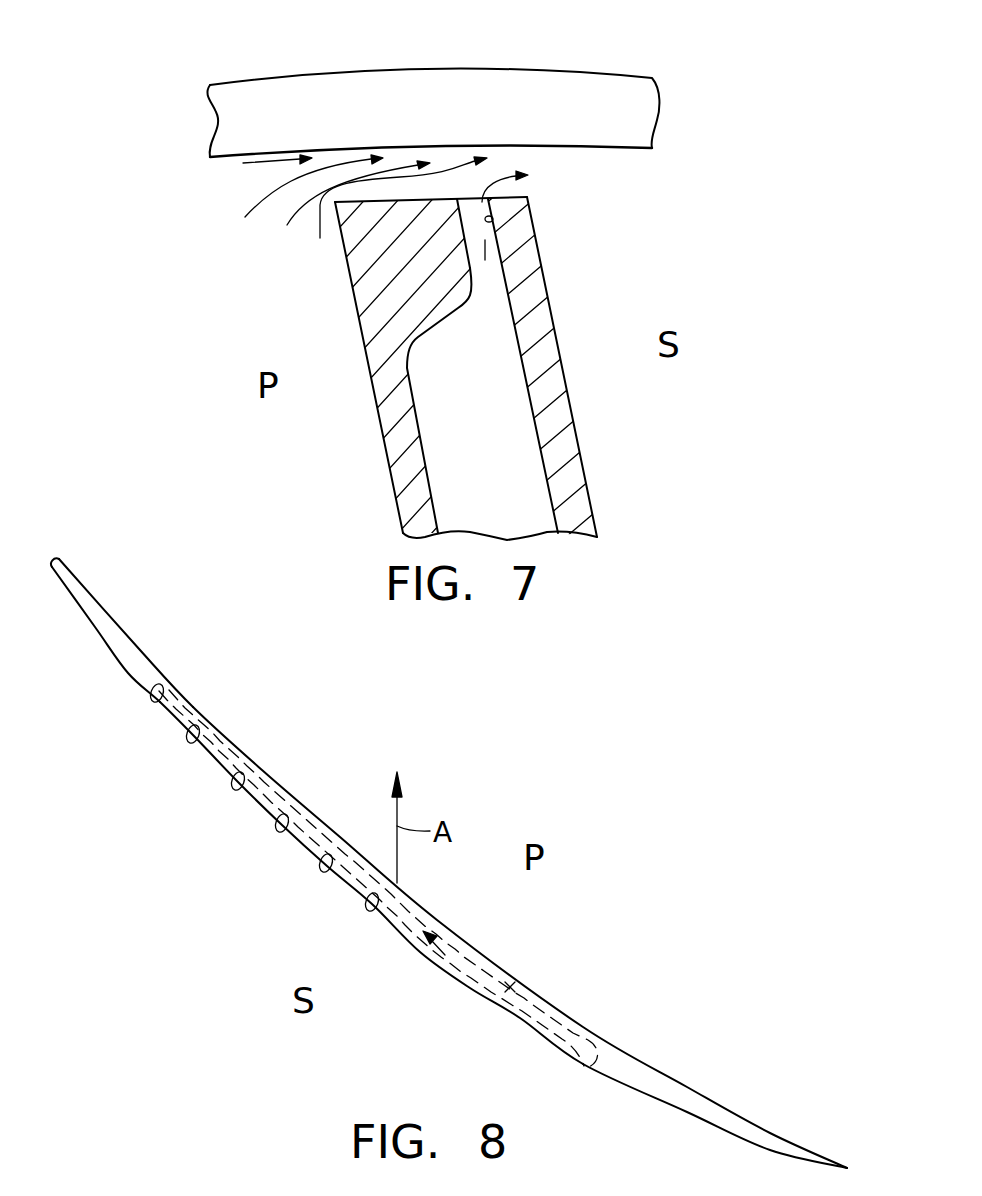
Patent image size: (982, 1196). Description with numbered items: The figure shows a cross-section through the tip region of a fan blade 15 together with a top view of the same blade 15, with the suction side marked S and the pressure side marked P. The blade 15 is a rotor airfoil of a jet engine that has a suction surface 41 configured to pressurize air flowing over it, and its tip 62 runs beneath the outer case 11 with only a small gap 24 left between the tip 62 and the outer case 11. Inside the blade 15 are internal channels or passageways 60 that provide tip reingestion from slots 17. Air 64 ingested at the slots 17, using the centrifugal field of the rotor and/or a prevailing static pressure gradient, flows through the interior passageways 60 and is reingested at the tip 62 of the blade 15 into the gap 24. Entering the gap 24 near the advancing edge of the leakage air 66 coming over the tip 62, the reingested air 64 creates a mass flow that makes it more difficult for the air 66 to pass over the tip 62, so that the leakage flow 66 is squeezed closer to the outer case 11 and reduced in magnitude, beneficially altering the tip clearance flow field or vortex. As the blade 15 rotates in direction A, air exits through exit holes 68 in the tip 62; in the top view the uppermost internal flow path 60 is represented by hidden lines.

In FIG. 7, the outer case 11 is at (568, 75).
In FIG. 7, the blade 15 is at (570, 398).
In FIG. 8, the blade 15 is at (688, 1085).
In FIG. 8, the slots 17 is at (590, 1066).
In FIG. 7, the gap 24 is at (522, 164).
In FIG. 7, the suction surface 41 is at (384, 455).
In FIG. 8, the suction surface 41 is at (480, 996).
In FIG. 7, the internal passageways 60 is at (508, 475).
In FIG. 8, the internal passageways 60 is at (520, 977).
In FIG. 7, the tip 62 is at (410, 196).
In FIG. 8, the tip 62 is at (94, 617).
In FIG. 7, the ingested air 64 is at (487, 254).
In FIG. 8, the ingested air 64 is at (463, 962).
In FIG. 7, the leakage air 66 is at (267, 162).
In FIG. 8, the leakage air 66 is at (370, 905).
In FIG. 7, the exit holes 68 is at (493, 217).
In FIG. 8, the exit holes 68 is at (228, 787).